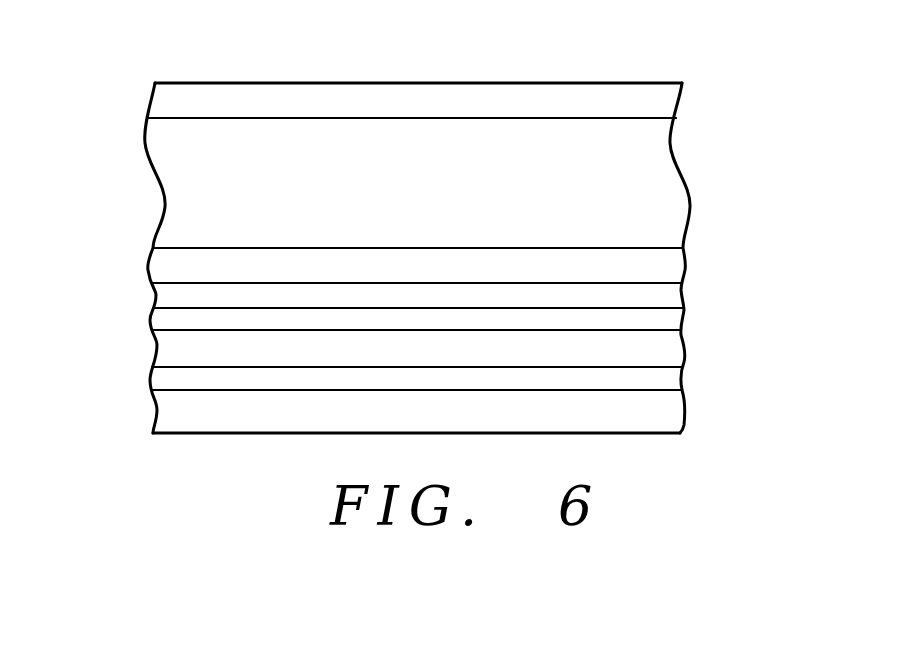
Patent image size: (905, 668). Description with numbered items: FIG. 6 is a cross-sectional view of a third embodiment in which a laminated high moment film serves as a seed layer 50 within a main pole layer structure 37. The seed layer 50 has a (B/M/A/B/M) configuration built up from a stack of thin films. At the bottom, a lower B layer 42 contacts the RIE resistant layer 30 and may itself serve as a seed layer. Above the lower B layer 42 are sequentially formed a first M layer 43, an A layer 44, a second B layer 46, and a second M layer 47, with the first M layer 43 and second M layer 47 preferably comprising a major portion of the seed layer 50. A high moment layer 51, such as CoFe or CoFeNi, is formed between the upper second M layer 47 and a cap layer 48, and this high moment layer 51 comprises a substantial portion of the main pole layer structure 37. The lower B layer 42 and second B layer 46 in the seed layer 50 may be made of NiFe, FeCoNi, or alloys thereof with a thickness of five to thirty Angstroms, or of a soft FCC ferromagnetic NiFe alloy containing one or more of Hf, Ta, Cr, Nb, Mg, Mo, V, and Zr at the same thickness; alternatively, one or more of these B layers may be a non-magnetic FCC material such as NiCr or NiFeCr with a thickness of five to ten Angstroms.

The main pole layer structure 37 is at (112, 61).
The cap layer 48 is at (655, 104).
The high moment layer 51 is at (655, 183).
The second M layer 47 is at (655, 264).
The second B layer 46 is at (657, 293).
The A layer 44 is at (657, 316).
The first M layer 43 is at (657, 348).
The lower B layer 42 is at (657, 376).
The RIE resistant layer 30 is at (657, 404).
The seed layer 50 is at (112, 247).